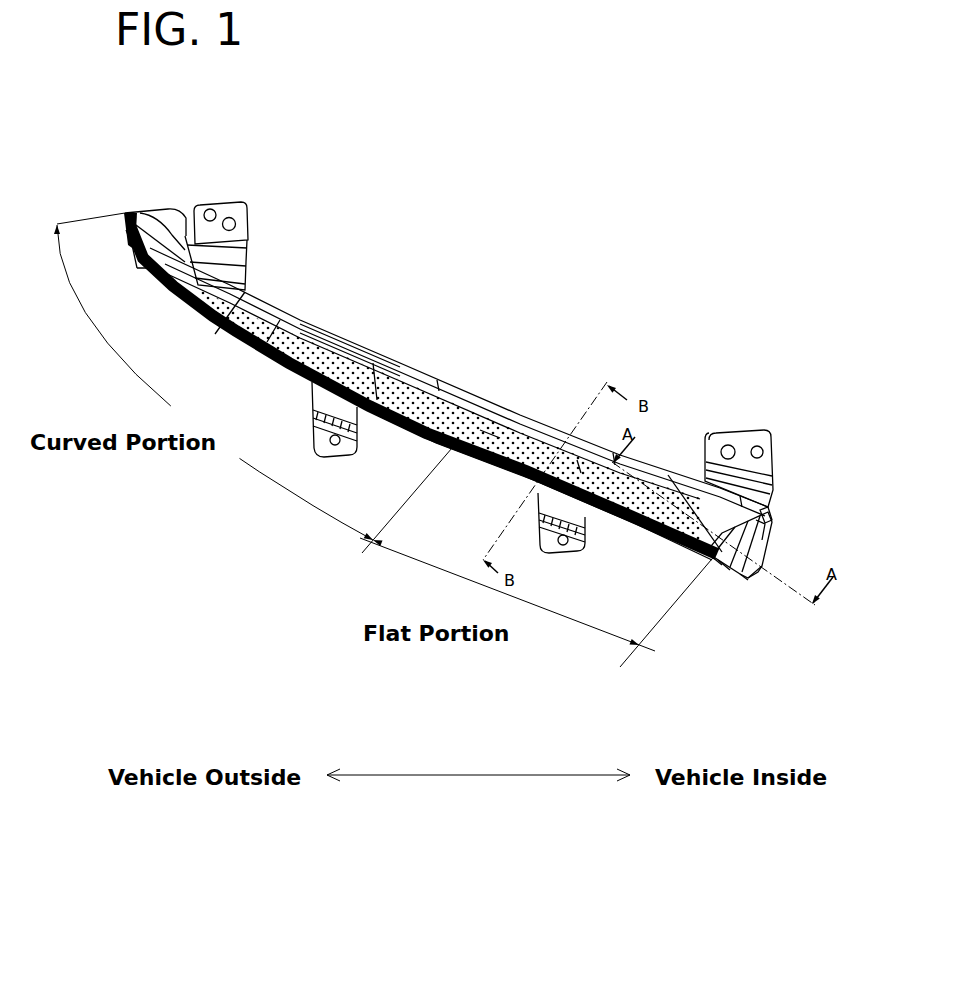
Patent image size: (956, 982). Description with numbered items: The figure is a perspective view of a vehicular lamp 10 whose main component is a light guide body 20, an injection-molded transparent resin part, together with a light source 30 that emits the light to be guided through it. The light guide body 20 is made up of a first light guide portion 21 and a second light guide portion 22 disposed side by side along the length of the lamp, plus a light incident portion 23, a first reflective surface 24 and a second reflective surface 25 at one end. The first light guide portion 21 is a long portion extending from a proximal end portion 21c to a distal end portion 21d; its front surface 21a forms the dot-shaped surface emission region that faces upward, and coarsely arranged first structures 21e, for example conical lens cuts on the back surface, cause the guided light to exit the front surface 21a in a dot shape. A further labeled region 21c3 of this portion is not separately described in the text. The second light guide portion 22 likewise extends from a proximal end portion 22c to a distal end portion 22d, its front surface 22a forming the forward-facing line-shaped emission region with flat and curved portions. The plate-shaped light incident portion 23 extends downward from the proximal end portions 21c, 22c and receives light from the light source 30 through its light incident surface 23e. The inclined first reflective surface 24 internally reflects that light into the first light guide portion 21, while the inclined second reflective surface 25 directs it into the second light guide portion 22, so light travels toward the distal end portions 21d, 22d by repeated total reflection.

The vehicular lamp 10 is at (495, 246).
The light guide body 20 is at (336, 318).
The first light guide portion 21 is at (437, 390).
The front surface 21a is at (388, 376).
The proximal end portion 21c is at (766, 517).
The upper wall end region 21c3 is at (488, 440).
The distal end portion 21d is at (160, 210).
The first structures 21e is at (354, 345).
The second light guide portion 22 is at (280, 365).
The front surface 22a is at (398, 428).
The proximal end portion 22c is at (715, 575).
The distal end portion 22d is at (134, 263).
The light incident portion 23 is at (765, 552).
The light incident surface 23e is at (752, 583).
The first reflective surface 24 is at (766, 538).
The second reflective surface 25 is at (727, 572).
The light source 30 is at (760, 573).